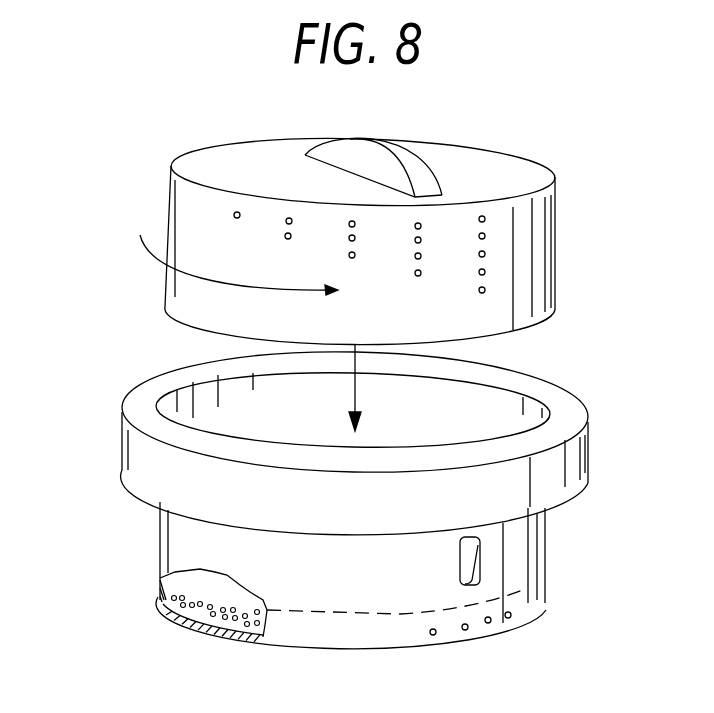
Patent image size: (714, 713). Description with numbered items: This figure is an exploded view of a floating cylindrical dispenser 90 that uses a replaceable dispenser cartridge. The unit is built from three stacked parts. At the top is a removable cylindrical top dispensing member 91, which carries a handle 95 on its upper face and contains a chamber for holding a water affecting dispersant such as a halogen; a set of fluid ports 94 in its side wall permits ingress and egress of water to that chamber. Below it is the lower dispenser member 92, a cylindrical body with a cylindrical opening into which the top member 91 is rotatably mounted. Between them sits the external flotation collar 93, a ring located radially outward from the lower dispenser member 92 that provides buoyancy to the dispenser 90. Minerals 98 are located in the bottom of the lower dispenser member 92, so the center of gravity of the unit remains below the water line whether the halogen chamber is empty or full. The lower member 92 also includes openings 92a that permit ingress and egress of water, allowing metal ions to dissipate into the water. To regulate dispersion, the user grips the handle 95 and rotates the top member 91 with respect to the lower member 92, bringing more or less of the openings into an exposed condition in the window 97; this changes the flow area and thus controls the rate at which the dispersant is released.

The floating cylindrical dispenser 90 is at (136, 274).
The top dispensing member 91 is at (520, 157).
The lower dispenser member 92 is at (547, 558).
The openings 92a is at (510, 620).
The external flotation collar 93 is at (588, 450).
The fluid ports 94 is at (349, 236).
The handle 95 is at (365, 155).
The window 97 is at (462, 587).
The minerals 98 is at (197, 622).